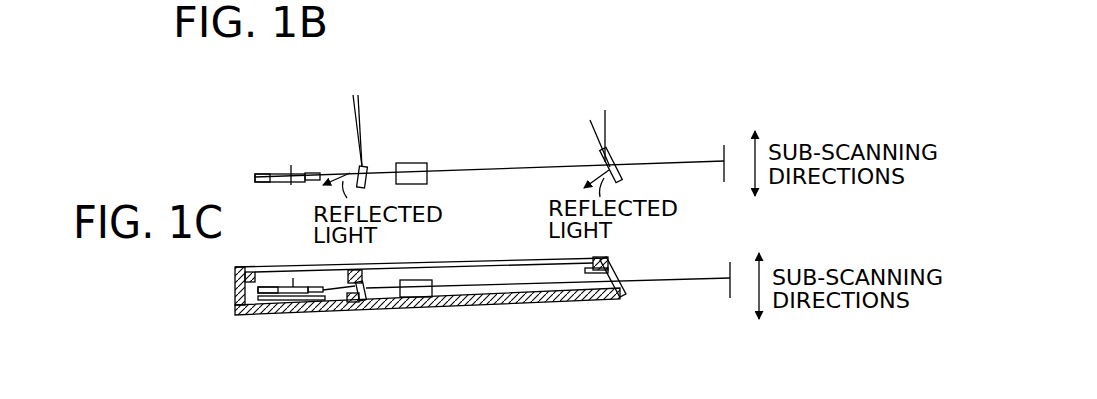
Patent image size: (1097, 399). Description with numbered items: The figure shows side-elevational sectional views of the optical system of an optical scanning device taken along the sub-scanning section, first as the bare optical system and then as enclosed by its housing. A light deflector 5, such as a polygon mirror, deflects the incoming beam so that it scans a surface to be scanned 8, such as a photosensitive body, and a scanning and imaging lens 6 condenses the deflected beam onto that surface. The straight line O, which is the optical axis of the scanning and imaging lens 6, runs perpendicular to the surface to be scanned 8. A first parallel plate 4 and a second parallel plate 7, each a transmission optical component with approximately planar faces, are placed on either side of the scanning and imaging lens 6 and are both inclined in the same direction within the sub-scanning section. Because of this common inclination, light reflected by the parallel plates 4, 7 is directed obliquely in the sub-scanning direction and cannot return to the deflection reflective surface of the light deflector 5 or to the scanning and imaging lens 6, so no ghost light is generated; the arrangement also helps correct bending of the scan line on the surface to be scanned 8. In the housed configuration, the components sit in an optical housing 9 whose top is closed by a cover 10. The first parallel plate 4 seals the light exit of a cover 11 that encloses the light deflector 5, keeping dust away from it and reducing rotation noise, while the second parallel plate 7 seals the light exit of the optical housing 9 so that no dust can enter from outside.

In FIG. 1B, the first parallel plate 4 is at (367, 167).
In FIG. 1C, the first parallel plate 4 is at (366, 300).
In FIG. 1B, the light deflector 5 is at (294, 166).
In FIG. 1C, the light deflector 5 is at (280, 287).
In FIG. 1B, the scanning and imaging lens 6 is at (428, 163).
In FIG. 1C, the scanning and imaging lens 6 is at (421, 297).
In FIG. 1B, the second parallel plate 7 is at (615, 157).
In FIG. 1C, the second parallel plate 7 is at (623, 289).
In FIG. 1B, the surface to be scanned 8 is at (722, 171).
In FIG. 1C, the surface to be scanned 8 is at (728, 284).
In FIG. 1C, the optical housing 9 is at (520, 300).
In FIG. 1C, the cover 10 is at (486, 262).
In FIG. 1C, the cover 11 is at (362, 270).
In FIG. 1B, the optical axis O is at (672, 161).
In FIG. 1C, the optical axis O is at (698, 278).